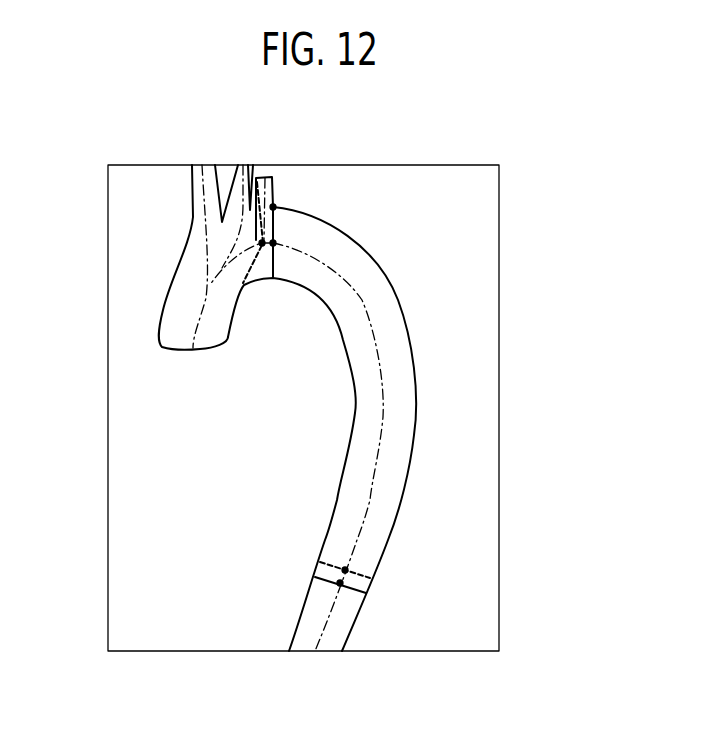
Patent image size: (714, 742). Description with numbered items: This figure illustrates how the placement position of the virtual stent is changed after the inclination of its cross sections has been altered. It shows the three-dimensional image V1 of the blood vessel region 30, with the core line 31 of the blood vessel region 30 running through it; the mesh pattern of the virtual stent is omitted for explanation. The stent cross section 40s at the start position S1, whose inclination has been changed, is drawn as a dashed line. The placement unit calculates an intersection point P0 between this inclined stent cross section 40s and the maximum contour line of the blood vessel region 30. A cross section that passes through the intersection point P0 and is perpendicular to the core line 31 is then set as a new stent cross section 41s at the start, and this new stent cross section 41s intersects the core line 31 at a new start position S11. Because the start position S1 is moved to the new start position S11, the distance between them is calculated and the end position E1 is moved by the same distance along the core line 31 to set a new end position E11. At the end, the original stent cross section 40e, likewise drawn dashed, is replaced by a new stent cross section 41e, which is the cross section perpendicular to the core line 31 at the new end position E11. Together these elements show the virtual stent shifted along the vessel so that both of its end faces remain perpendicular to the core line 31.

The three-dimensional image V1 is at (499, 222).
The blood vessel region 30 is at (412, 351).
The core line 31 is at (383, 418).
The new stent cross section 41s is at (260, 273).
The stent cross section 40s is at (237, 287).
The intersection point P0 is at (273, 207).
The new start position S11 is at (273, 243).
The start position S1 is at (262, 243).
The new stent cross section 41e is at (353, 593).
The stent cross section 40e is at (352, 568).
The end position E1 is at (345, 570).
The new end position E11 is at (340, 583).